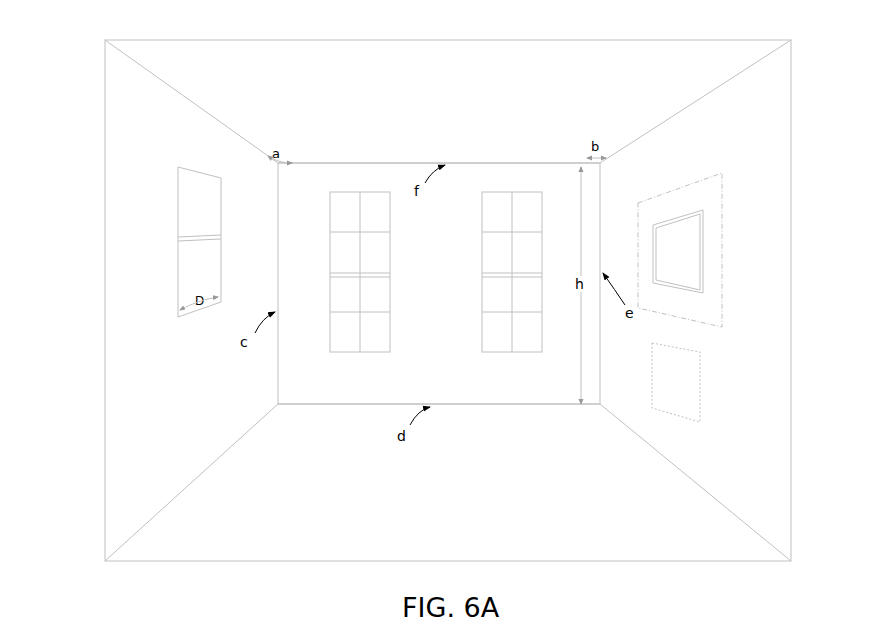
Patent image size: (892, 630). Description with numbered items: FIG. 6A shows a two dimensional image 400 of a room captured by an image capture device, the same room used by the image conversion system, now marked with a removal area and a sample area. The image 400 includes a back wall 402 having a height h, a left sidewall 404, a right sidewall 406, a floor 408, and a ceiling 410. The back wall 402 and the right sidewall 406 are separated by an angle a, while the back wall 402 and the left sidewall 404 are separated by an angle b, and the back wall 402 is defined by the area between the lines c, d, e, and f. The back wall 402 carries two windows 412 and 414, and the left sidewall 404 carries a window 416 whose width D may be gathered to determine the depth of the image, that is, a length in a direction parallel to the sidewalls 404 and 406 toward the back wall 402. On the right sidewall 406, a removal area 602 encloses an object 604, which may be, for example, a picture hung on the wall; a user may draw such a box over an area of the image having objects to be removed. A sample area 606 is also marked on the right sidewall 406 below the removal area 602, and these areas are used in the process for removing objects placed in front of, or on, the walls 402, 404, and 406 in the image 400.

The image 400 is at (97, 477).
The back wall 402 is at (333, 393).
The left sidewall 404 is at (118, 336).
The right sidewall 406 is at (620, 383).
The floor 408 is at (260, 490).
The ceiling 410 is at (282, 141).
The window 412 is at (325, 327).
The window 414 is at (475, 330).
The window 416 is at (178, 252).
The removal area 602 is at (723, 183).
The object 604 is at (710, 253).
The sample area 606 is at (703, 383).